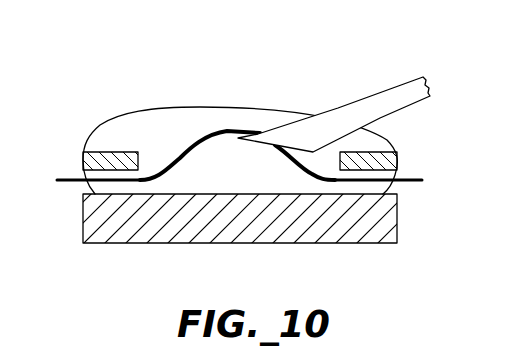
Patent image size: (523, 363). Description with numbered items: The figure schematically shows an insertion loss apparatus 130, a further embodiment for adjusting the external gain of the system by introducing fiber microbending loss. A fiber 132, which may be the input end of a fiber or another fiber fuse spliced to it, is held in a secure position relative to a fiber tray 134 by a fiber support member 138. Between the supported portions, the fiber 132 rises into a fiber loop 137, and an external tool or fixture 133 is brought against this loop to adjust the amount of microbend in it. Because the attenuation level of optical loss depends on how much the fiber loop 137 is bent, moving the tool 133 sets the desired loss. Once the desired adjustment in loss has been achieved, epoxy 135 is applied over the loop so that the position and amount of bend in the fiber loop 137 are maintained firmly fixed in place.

The insertion loss apparatus 130 is at (292, 64).
The fiber 132 is at (177, 157).
The tool 133 is at (387, 95).
The fiber tray 134 is at (83, 232).
The epoxy 135 is at (197, 118).
The fiber loop 137 is at (213, 133).
The fiber support member 138 is at (108, 150).